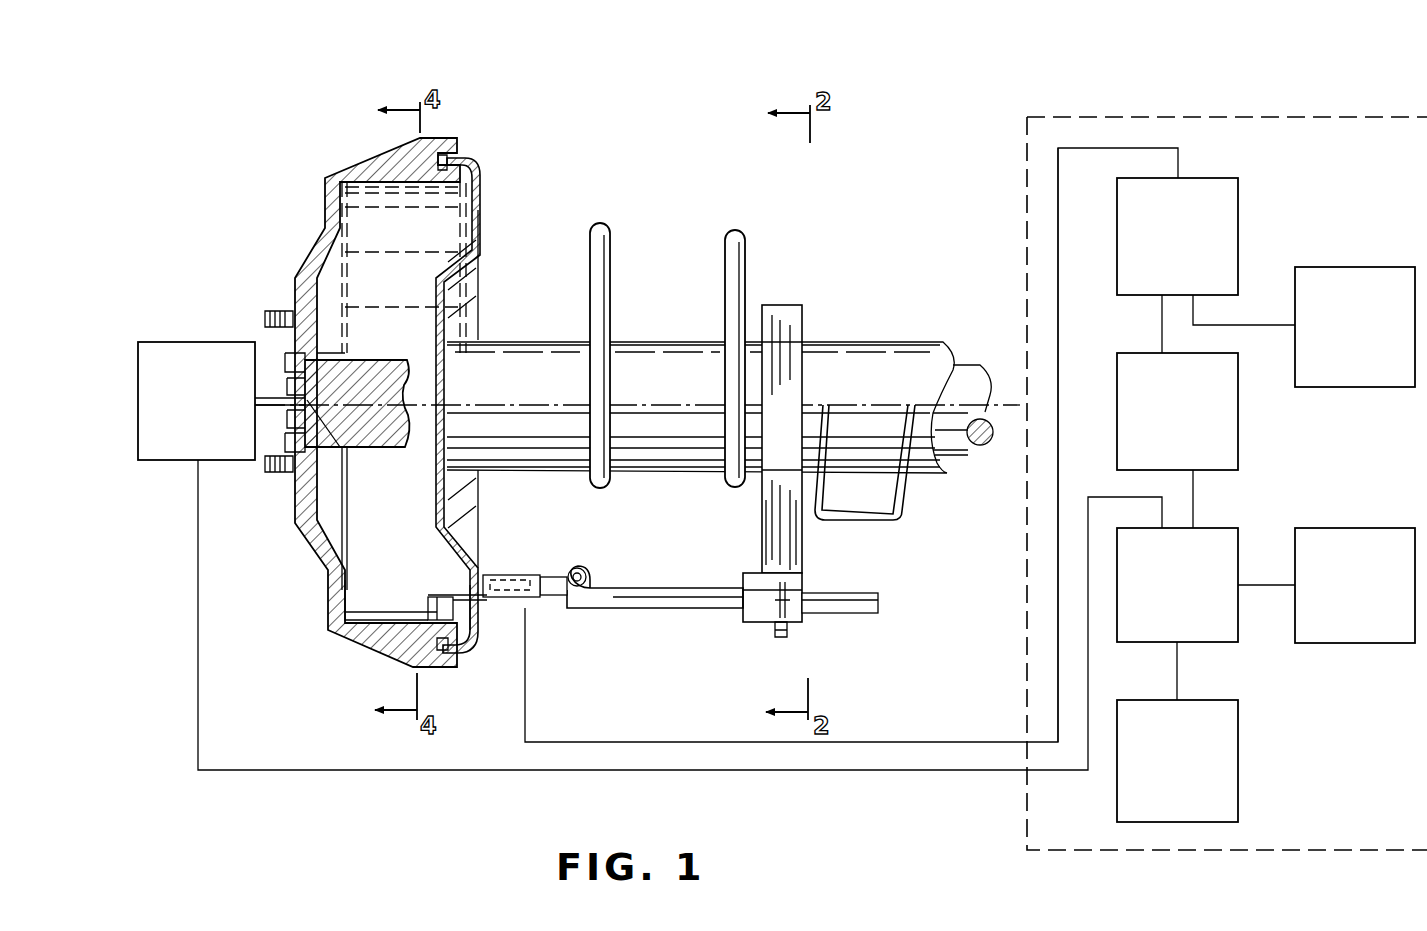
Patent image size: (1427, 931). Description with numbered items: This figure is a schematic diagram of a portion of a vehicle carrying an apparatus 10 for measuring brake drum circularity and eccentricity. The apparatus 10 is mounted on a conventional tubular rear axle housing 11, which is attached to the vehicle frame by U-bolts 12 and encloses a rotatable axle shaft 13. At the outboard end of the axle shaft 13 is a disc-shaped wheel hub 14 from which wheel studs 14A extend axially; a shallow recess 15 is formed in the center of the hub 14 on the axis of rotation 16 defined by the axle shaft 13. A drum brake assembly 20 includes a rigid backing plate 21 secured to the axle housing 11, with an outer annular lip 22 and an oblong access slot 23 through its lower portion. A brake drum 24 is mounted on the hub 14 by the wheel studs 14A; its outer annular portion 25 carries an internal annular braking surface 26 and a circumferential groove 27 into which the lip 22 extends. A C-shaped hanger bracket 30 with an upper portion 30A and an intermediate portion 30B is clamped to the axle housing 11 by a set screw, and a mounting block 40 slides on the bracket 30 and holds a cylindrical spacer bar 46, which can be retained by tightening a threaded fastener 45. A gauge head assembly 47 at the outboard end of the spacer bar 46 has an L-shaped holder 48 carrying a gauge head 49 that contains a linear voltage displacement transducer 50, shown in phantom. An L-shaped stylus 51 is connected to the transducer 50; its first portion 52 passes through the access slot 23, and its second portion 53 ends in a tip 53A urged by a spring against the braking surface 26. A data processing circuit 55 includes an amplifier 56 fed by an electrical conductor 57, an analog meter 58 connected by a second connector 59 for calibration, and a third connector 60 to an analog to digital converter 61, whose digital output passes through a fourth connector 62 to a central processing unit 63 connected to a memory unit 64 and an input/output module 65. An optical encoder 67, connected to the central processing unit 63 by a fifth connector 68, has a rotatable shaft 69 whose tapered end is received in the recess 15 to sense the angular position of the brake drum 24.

The apparatus for measuring brake drum circularity and eccentricity 10 is at (977, 92).
The tubular rear axle housing 11 is at (890, 358).
The U-bolts 12 is at (595, 480).
The axle shaft 13 is at (365, 358).
The wheel hub 14 is at (330, 318).
The wheel studs 14A is at (276, 312).
The recess 15 is at (335, 445).
The axis of rotation 16 is at (505, 405).
The drum brake assembly 20 is at (523, 158).
The backing plate 21 is at (475, 285).
The outer annular lip 22 is at (458, 652).
The access slot 23 is at (478, 600).
The brake drum 24 is at (325, 228).
The outer annular portion 25 is at (380, 162).
The internal annular braking surface 26 is at (417, 236).
The circumferential groove 27 is at (465, 163).
The hanger bracket 30 is at (780, 315).
The upper portion of bracket 30A is at (790, 368).
The intermediate portion of bracket 30B is at (775, 520).
The mounting block 40 is at (805, 582).
The threaded bracket fastener 45 is at (775, 637).
The cylindrical spacer bar 46 is at (850, 613).
The gauge head assembly 47 is at (565, 552).
The L-shaped holder 48 is at (550, 600).
The gauge head 49 is at (527, 575).
The linear voltage displacement transducer (LVDT) 50 is at (502, 585).
The L-shaped stylus 51 is at (435, 597).
The first portion of stylus 52 is at (447, 595).
The second portion of stylus 53 is at (427, 607).
The stylus tip 53A is at (430, 618).
The data processing circuit 55 is at (1296, 117).
The amplifier 56 is at (1238, 205).
The electrical conductor 57 is at (1058, 383).
The analog meter 58 is at (1372, 267).
The second electrical connector 59 is at (1265, 325).
The third electrical connector 60 is at (1162, 322).
The analog to digital converter 61 is at (1238, 450).
The fourth electrical connector 62 is at (1193, 505).
The central processing unit 63 is at (1225, 642).
The memory unit 64 is at (1378, 643).
The input/output module 65 is at (1238, 752).
The optical encoder 67 is at (160, 465).
The fifth electrical connector 68 is at (1088, 672).
The rotatable shaft 69 is at (275, 396).